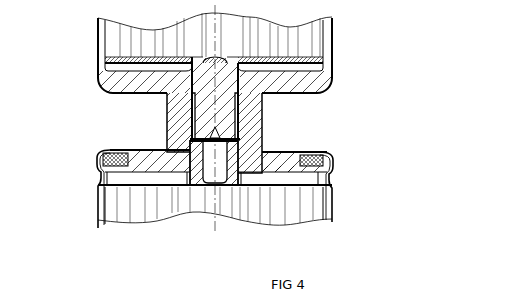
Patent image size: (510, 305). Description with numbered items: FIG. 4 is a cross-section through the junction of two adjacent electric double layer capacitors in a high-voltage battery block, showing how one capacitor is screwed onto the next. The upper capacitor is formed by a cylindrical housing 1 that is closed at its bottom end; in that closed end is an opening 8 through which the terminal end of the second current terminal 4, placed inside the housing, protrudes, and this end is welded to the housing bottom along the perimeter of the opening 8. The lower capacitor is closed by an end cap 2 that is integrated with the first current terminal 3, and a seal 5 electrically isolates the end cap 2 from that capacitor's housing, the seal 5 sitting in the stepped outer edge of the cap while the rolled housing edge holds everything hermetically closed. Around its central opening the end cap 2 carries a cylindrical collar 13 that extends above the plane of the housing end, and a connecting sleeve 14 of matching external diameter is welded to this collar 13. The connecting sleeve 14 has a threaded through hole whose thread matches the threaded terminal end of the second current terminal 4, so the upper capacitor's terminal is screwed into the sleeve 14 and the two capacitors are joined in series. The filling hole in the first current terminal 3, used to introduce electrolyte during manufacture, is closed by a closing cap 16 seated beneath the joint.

The cylindrical housing 1 is at (232, 80).
The end cap 2 is at (283, 162).
The first current terminal 3 is at (190, 153).
The second current terminal 4 is at (212, 110).
The seal 5 is at (322, 180).
The opening 8 is at (193, 79).
The cylindrical collar 13 is at (253, 147).
The connecting sleeve 14 is at (253, 120).
The closing cap 16 is at (213, 155).